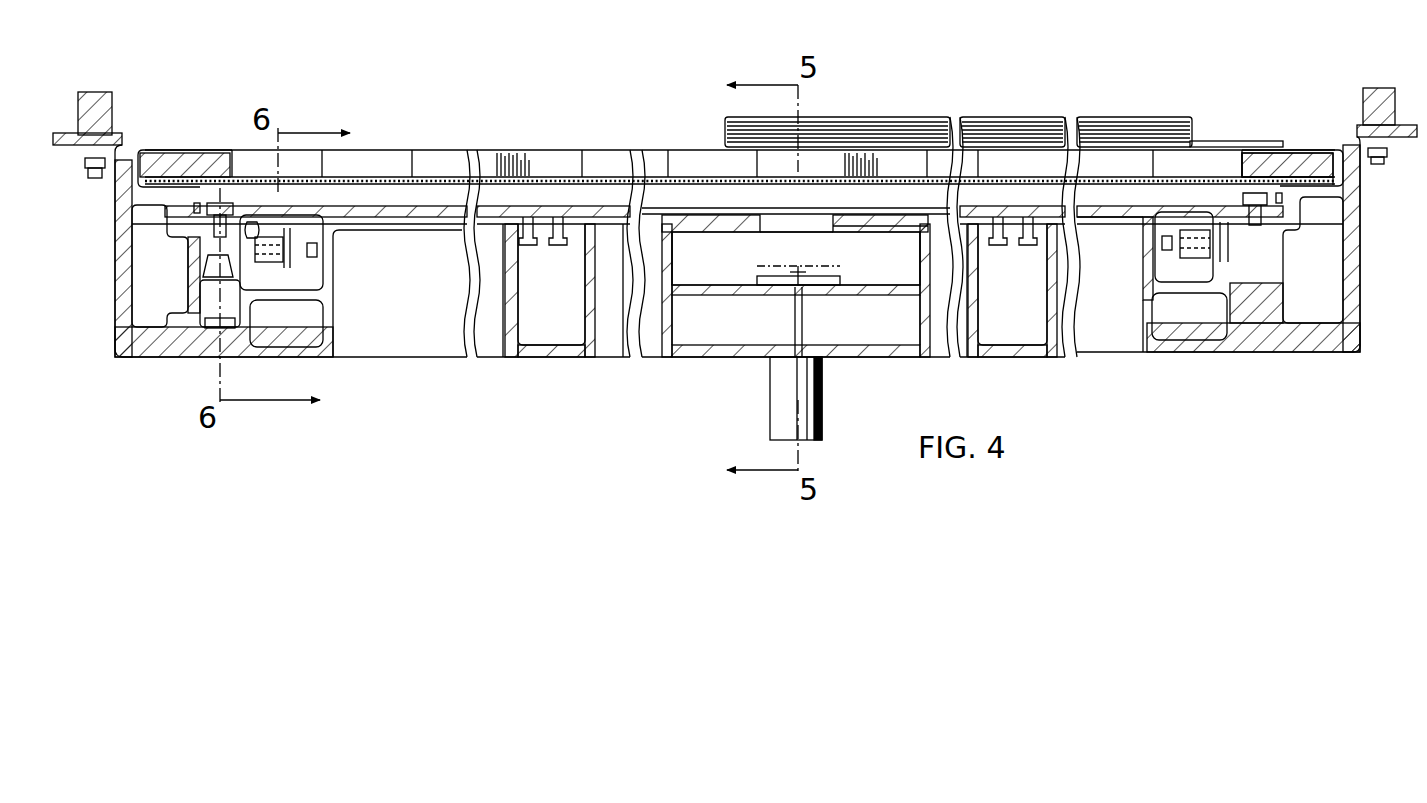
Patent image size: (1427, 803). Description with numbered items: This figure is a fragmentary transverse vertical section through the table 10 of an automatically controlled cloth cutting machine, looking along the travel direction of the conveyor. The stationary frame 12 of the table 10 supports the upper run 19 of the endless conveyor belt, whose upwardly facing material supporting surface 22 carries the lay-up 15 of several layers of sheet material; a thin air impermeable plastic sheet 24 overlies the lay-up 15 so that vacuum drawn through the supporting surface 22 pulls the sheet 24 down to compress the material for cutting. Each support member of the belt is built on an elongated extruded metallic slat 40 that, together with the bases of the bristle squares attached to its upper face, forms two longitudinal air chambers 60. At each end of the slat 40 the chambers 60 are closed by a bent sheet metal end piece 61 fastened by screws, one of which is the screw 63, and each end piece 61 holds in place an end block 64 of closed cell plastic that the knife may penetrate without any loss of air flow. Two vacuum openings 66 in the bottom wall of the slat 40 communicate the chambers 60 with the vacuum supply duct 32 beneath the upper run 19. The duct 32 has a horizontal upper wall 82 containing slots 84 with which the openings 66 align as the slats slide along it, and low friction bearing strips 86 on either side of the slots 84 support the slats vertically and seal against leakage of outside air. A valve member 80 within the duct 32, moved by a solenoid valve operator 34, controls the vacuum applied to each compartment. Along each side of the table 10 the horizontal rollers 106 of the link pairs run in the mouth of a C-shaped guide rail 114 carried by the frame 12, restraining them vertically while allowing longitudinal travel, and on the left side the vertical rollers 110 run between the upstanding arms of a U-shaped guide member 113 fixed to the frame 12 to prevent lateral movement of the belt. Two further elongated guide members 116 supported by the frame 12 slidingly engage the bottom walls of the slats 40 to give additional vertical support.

The table 10 is at (1135, 82).
The stationary frame 12 is at (1360, 238).
The lay-up 15 is at (1169, 119).
The upper run 19 is at (540, 150).
The material supporting surface 22 is at (598, 150).
The sheet 24 is at (1218, 141).
The vacuum supply duct 32 is at (878, 358).
The electric solenoid valve operators 34 is at (822, 394).
The slat 40 is at (420, 220).
The air chambers 60 is at (436, 190).
The end piece 61 is at (147, 150).
The screw 63 is at (195, 210).
The end block 64 is at (1297, 144).
The vacuum openings 66 is at (816, 215).
The valve member 80 is at (845, 262).
The upper wall 82 is at (718, 233).
The slot 84 is at (850, 215).
The bearing strips 86 is at (721, 215).
The roller 106 is at (293, 260).
The roller 110 is at (252, 308).
The U-shaped guide member 113 is at (212, 334).
The guide rail 114 is at (318, 247).
The guide members 116 is at (543, 245).